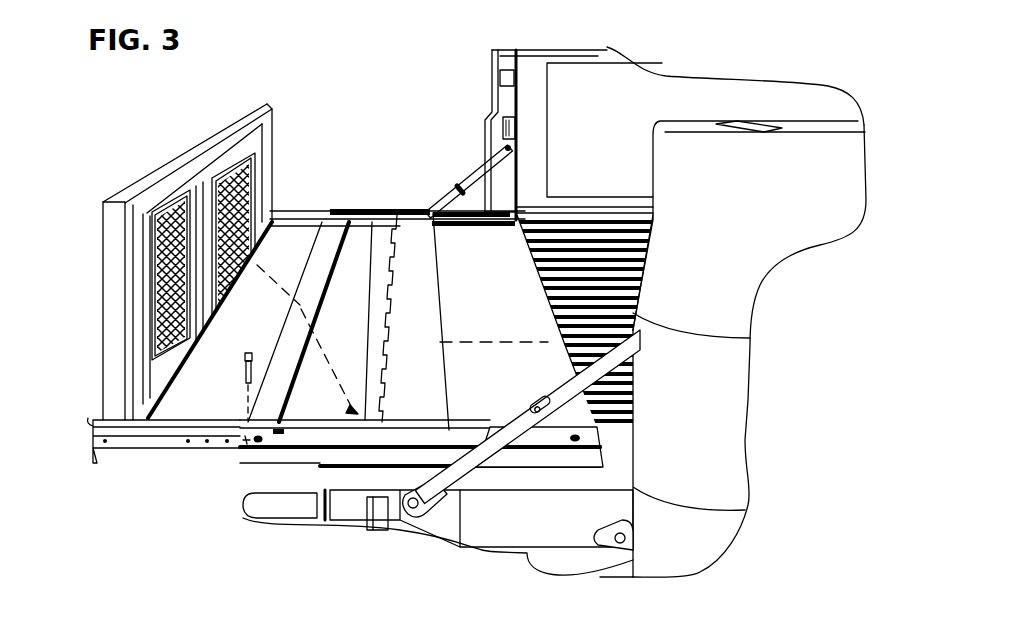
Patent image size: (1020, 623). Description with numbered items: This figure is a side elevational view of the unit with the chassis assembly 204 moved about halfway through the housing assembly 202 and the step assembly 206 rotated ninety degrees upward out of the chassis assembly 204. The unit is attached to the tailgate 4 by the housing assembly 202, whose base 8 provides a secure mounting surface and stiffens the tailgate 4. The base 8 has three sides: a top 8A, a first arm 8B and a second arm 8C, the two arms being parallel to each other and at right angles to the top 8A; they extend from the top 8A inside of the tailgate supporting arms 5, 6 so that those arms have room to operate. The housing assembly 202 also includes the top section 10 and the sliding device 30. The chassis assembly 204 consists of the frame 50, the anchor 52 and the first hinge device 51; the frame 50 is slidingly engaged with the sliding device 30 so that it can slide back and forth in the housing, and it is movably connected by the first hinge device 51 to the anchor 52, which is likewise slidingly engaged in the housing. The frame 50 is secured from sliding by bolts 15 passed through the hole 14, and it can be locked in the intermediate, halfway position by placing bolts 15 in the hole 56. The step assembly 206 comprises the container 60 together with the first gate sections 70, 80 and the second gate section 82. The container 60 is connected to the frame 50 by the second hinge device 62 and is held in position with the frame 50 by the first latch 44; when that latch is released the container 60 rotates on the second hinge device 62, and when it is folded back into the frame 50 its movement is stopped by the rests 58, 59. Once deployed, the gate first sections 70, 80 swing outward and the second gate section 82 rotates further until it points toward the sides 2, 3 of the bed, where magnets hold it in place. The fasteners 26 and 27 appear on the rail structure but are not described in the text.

The side 2 is at (752, 282).
The side 3 is at (667, 84).
The tailgate 4 is at (505, 545).
The tailgate supporting arm 5 is at (517, 412).
The tailgate supporting arm 6 is at (470, 179).
The base 8 is at (322, 223).
The top 8A is at (314, 276).
The first arm 8B is at (388, 499).
The second arm 8C is at (473, 226).
The top section 10 is at (362, 441).
The hole for receiving bolts 14 is at (240, 467).
The bolt 15 is at (243, 374).
The fastener 26 is at (575, 443).
The bracket 27 is at (263, 468).
The sliding device 30 is at (251, 457).
The first latch 44 is at (207, 139).
The frame 50 is at (378, 292).
The first hinge device 51 is at (395, 274).
The anchor 52 is at (420, 300).
The hole for receiving bolts 56 is at (190, 445).
The rest 58 is at (382, 229).
The rest 59 is at (350, 408).
The container 60 is at (108, 309).
The second hinge device 62 is at (200, 332).
The first gate section 70 is at (260, 120).
The first gate section 80 is at (165, 190).
The second gate section 82 is at (200, 165).
The housing assembly 202 is at (510, 473).
The chassis assembly 204 is at (112, 472).
The step assembly 206 is at (97, 381).